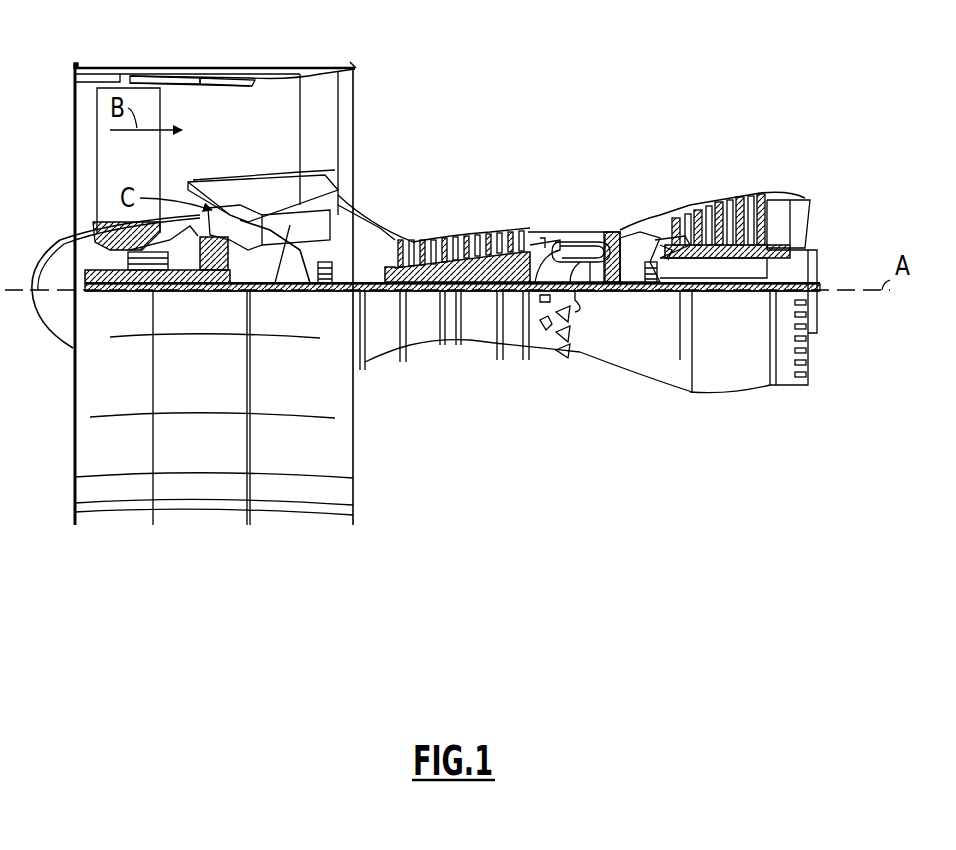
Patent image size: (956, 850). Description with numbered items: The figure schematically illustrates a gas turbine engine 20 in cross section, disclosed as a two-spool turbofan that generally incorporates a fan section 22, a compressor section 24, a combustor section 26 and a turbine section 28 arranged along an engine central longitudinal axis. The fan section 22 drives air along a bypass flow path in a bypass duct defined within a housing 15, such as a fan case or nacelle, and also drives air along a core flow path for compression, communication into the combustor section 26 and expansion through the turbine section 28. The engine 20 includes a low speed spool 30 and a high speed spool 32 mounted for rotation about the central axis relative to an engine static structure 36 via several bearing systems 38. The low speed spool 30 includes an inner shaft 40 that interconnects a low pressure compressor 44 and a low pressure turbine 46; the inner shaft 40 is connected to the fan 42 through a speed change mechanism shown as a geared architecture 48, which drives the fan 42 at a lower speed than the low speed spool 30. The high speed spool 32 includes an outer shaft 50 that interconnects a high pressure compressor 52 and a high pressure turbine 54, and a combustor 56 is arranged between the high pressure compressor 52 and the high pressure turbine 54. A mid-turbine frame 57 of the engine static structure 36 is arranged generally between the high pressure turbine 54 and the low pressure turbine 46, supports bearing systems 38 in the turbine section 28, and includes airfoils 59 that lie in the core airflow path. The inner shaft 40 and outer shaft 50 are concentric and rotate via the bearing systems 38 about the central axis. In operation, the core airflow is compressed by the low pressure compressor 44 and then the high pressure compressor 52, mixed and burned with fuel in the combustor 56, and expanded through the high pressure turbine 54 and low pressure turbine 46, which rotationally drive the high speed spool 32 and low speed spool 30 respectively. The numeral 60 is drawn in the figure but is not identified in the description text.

The housing 15 is at (217, 73).
The gas turbine engine 20 is at (583, 100).
The fan section 22 is at (160, 62).
The compressor section 24 is at (398, 213).
The combustor section 26 is at (572, 208).
The turbine section 28 is at (703, 168).
The low speed spool 30 is at (480, 292).
The high speed spool 32 is at (517, 245).
The engine static structure 36 is at (512, 360).
The bearing systems 38 is at (322, 292).
The inner shaft 40 is at (375, 300).
The fan 42 is at (144, 170).
The low pressure compressor 44 is at (300, 212).
The low pressure turbine 46 is at (724, 195).
The geared architecture 48 is at (218, 292).
The outer shaft 50 is at (576, 292).
The high pressure compressor 52 is at (462, 240).
The high pressure turbine 54 is at (620, 215).
The combustor 56 is at (573, 240).
The mid-turbine frame 57 is at (660, 208).
The airfoils 59 is at (675, 262).
The core airflow path 60 is at (662, 218).